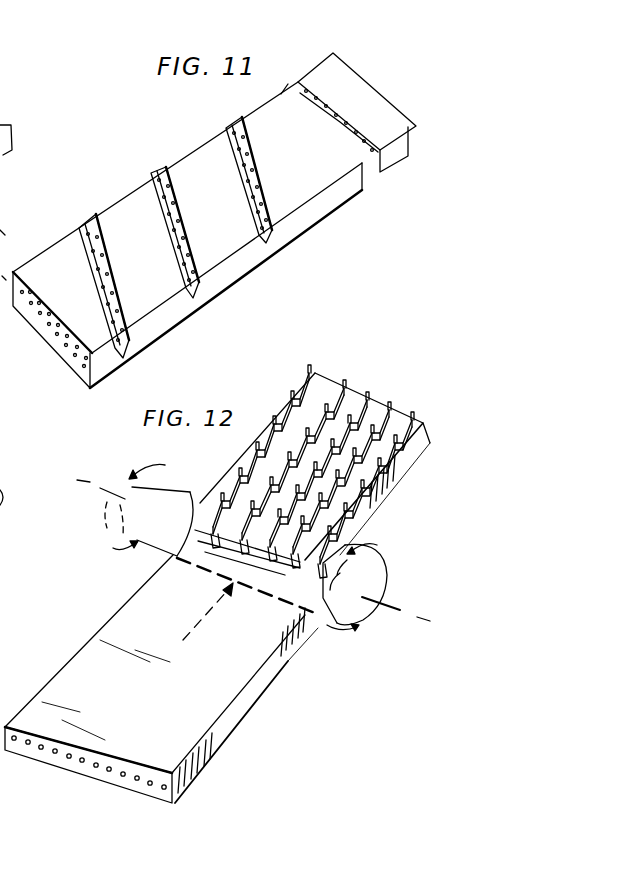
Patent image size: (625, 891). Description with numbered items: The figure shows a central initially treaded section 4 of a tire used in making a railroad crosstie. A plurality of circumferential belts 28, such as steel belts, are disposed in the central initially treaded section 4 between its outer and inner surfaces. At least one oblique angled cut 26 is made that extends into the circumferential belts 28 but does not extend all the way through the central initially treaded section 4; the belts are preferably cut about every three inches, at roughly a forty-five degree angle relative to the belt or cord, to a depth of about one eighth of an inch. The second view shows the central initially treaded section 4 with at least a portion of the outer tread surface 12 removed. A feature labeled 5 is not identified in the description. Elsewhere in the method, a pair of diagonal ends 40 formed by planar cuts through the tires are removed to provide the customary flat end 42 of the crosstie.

In FIG. 11, the central initially treaded section 4 is at (313, 220).
In FIG. 12, the central initially treaded section 4 is at (402, 492).
In FIG. 12, the top surface of slab 5 is at (327, 390).
In FIG. 12, the outer tread surface 12 is at (387, 414).
In FIG. 11, the cut 26 is at (158, 176).
In FIG. 11, the circumferential belts 28 is at (93, 235).
In FIG. 12, the circumferential belts 28 is at (25, 745).
In FIG. 11, the diagonal ends 40 is at (6, 183).
In FIG. 11, the flat end 42 is at (12, 119).